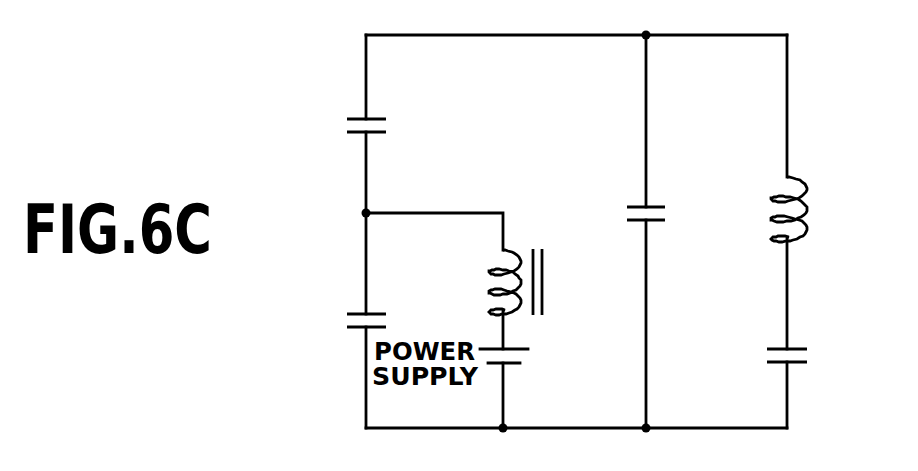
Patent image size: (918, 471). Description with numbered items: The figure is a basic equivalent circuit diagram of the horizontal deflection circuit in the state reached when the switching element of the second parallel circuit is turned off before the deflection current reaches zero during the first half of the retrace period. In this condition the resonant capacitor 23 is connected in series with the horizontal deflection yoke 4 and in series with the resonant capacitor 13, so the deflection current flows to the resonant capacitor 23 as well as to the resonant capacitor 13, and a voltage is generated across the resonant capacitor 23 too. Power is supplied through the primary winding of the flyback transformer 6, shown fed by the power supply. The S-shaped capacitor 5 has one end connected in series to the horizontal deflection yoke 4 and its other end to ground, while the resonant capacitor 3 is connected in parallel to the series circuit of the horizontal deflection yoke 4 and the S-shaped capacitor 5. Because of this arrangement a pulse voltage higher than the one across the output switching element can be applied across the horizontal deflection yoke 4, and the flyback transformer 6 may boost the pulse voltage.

The resonant capacitor 23 is at (352, 113).
The resonant capacitor 13 is at (352, 308).
The flyback transformer 6 is at (547, 280).
The resonant capacitor 3 is at (658, 200).
The horizontal deflection yoke 4 is at (811, 208).
The S-shaped capacitor 5 is at (798, 343).